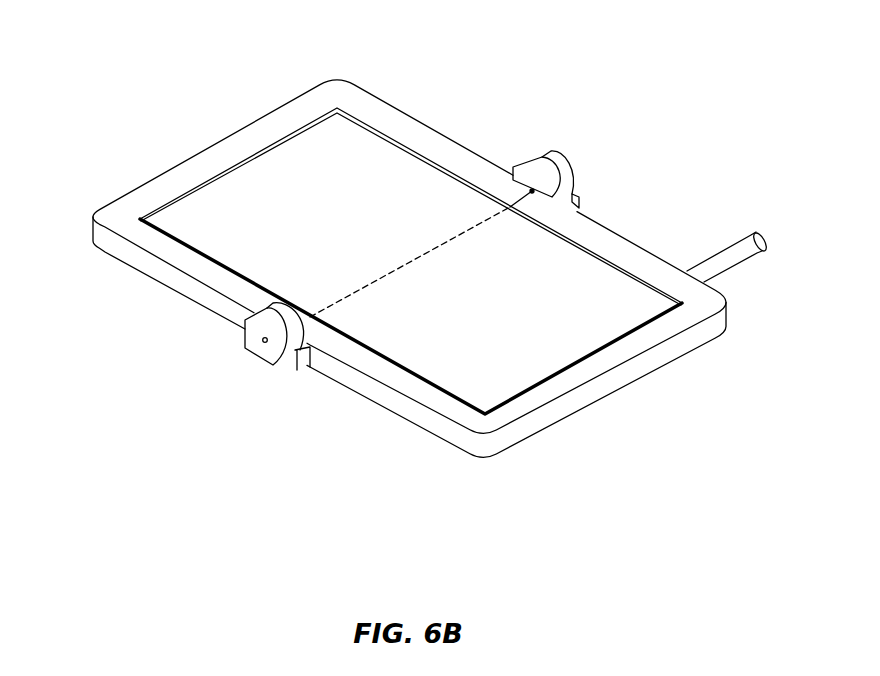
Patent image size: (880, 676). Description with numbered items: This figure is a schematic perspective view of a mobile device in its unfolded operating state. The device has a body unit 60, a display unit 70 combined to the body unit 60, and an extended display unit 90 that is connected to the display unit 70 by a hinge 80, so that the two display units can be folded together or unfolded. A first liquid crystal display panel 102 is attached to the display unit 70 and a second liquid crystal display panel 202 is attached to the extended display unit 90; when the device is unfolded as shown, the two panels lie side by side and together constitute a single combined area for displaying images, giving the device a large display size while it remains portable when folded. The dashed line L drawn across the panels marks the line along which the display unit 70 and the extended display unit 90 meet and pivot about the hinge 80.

The body unit 60 is at (424, 440).
The display unit 70 is at (623, 345).
The hinge 80 is at (583, 171).
The extended display unit 90 is at (157, 190).
The first liquid crystal display panel 102 is at (623, 290).
The second liquid crystal display panel 202 is at (283, 160).
The pivot axis line L is at (460, 233).